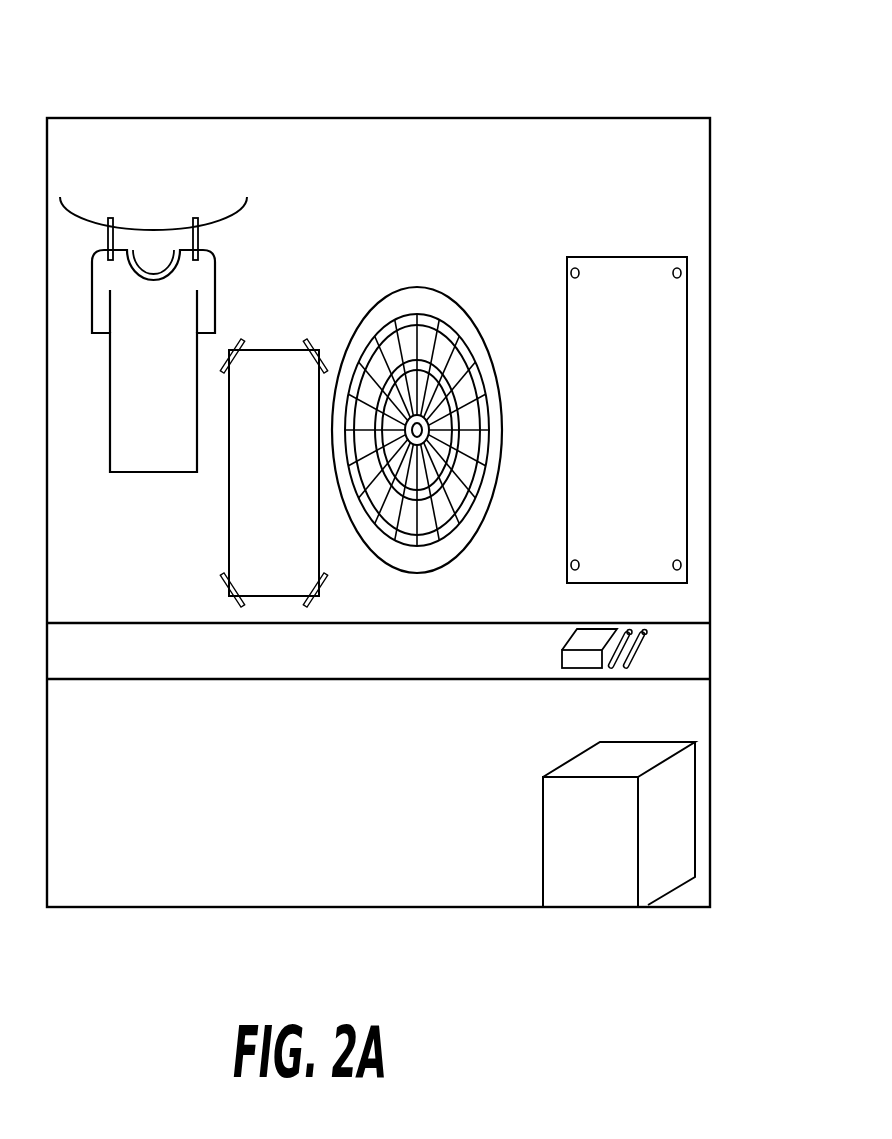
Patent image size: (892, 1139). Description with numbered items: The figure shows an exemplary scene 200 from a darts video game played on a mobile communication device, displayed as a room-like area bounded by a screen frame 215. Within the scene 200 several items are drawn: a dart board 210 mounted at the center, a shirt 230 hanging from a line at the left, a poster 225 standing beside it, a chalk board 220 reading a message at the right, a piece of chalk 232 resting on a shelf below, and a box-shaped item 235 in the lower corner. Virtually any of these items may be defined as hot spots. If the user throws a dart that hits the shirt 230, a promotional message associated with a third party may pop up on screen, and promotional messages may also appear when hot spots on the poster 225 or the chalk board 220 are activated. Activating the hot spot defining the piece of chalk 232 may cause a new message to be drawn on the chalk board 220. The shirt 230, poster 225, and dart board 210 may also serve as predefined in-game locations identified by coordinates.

The scene 200 is at (378, 463).
The display wall 215 is at (565, 143).
The dart board 210 is at (427, 295).
The chalk board 220 is at (682, 312).
The poster 225 is at (241, 525).
The shirt 230 is at (133, 437).
The piece of chalk 232 is at (645, 650).
The item 235 is at (622, 838).